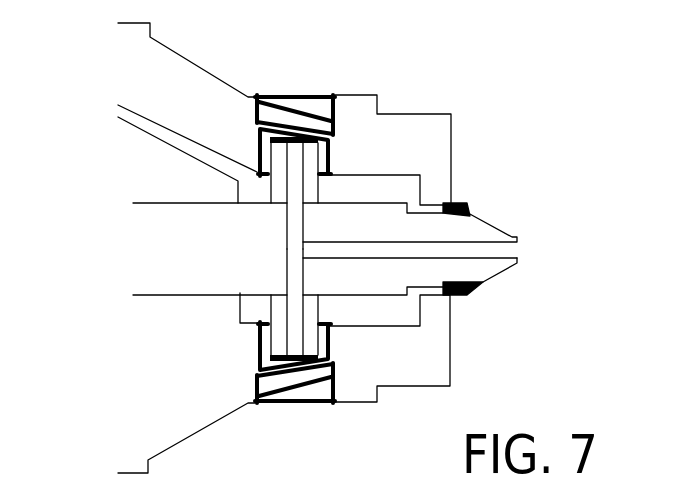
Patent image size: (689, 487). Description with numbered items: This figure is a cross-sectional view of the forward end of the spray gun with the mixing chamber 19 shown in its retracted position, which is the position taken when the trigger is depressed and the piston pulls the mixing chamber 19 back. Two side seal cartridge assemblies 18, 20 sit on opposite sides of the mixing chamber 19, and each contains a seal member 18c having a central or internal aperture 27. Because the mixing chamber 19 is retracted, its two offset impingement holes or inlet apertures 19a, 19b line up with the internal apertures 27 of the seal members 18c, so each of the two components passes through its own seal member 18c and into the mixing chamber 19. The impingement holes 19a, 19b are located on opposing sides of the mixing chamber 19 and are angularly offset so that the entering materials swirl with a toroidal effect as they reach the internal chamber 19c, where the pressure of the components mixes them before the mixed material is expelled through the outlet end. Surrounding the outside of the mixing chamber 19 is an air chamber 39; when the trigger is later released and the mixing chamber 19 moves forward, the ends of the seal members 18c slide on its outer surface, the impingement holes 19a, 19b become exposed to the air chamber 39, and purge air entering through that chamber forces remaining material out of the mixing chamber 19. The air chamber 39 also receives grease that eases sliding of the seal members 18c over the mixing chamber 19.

The side seal cartridge assembly 18 is at (337, 113).
The seal member 18c is at (312, 156).
The mixing chamber 19 is at (194, 258).
The impingement hole or inlet aperture 19a is at (294, 222).
The impingement hole or inlet aperture 19b is at (293, 278).
The internal chamber 19c is at (376, 250).
The side seal cartridge assembly 20 is at (336, 392).
The internal aperture 27 is at (293, 183).
The air chamber 39 is at (405, 188).